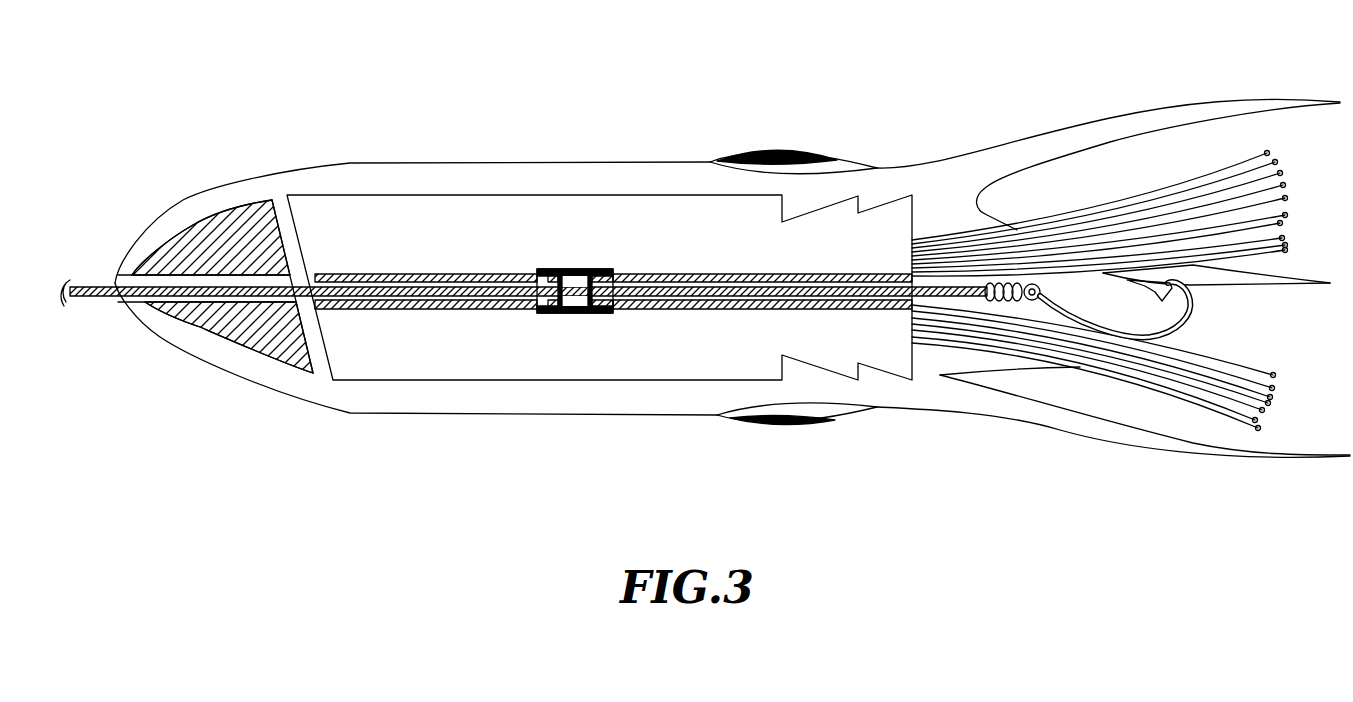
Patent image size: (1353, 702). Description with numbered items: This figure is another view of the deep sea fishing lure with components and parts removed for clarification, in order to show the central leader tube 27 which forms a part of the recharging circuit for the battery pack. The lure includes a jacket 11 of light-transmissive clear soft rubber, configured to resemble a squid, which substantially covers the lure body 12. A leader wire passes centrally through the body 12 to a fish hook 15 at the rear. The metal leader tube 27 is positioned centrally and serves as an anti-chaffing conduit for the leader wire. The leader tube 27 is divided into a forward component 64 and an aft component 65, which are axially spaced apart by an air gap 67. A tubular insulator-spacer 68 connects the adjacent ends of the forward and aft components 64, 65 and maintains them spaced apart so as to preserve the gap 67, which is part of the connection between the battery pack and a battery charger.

The jacket 11 is at (425, 160).
The lure body 12 is at (500, 180).
The fish hook 15 is at (1193, 307).
The leader tube 27 is at (373, 278).
The forward component 64 is at (465, 307).
The aft component 65 is at (648, 307).
The air gap 67 is at (576, 298).
The tubular insulator-spacer 68 is at (552, 270).